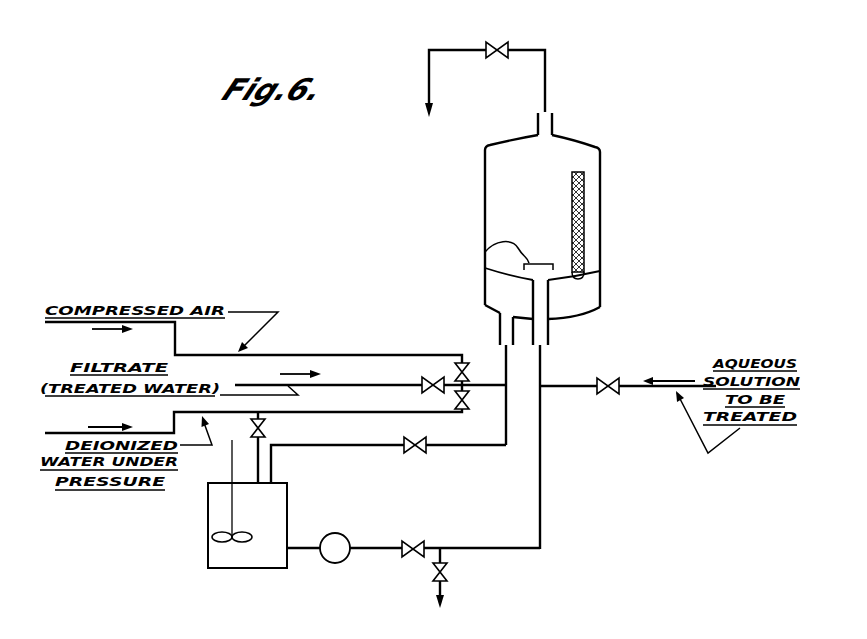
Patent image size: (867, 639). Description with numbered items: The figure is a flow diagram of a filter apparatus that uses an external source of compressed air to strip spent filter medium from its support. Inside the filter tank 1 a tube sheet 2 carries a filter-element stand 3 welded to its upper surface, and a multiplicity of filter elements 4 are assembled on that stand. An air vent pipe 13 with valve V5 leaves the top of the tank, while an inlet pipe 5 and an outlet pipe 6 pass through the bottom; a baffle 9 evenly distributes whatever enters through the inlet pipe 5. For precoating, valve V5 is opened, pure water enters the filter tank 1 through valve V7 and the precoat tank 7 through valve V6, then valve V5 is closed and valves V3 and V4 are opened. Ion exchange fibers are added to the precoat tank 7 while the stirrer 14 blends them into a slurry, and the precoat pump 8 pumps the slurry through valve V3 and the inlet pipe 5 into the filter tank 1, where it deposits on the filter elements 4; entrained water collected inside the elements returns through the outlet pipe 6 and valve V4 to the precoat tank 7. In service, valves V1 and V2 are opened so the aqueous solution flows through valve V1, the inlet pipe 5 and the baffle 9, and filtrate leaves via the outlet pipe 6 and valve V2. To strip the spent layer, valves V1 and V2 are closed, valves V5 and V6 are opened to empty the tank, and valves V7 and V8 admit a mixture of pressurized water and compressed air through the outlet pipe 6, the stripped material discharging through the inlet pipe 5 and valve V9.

The filter tank 1 is at (485, 197).
The tube sheet 2 is at (590, 274).
The filter-element stand 3 is at (585, 275).
The filter elements 4 is at (585, 180).
The inlet pipe 5 is at (549, 326).
The outlet pipe 6 is at (500, 330).
The precoat tank 7 is at (289, 495).
The precoat pump 8 is at (343, 536).
The baffle 9 is at (485, 251).
The air vent pipe 13 is at (552, 122).
The stirrer 14 is at (230, 460).
The valve V1 is at (609, 378).
The valve V2 is at (433, 377).
The valve V3 is at (413, 538).
The valve V4 is at (415, 434).
The valve V5 is at (497, 42).
The valve V6 is at (265, 428).
The valve V7 is at (469, 400).
The valve V8 is at (469, 372).
The valve V9 is at (447, 572).